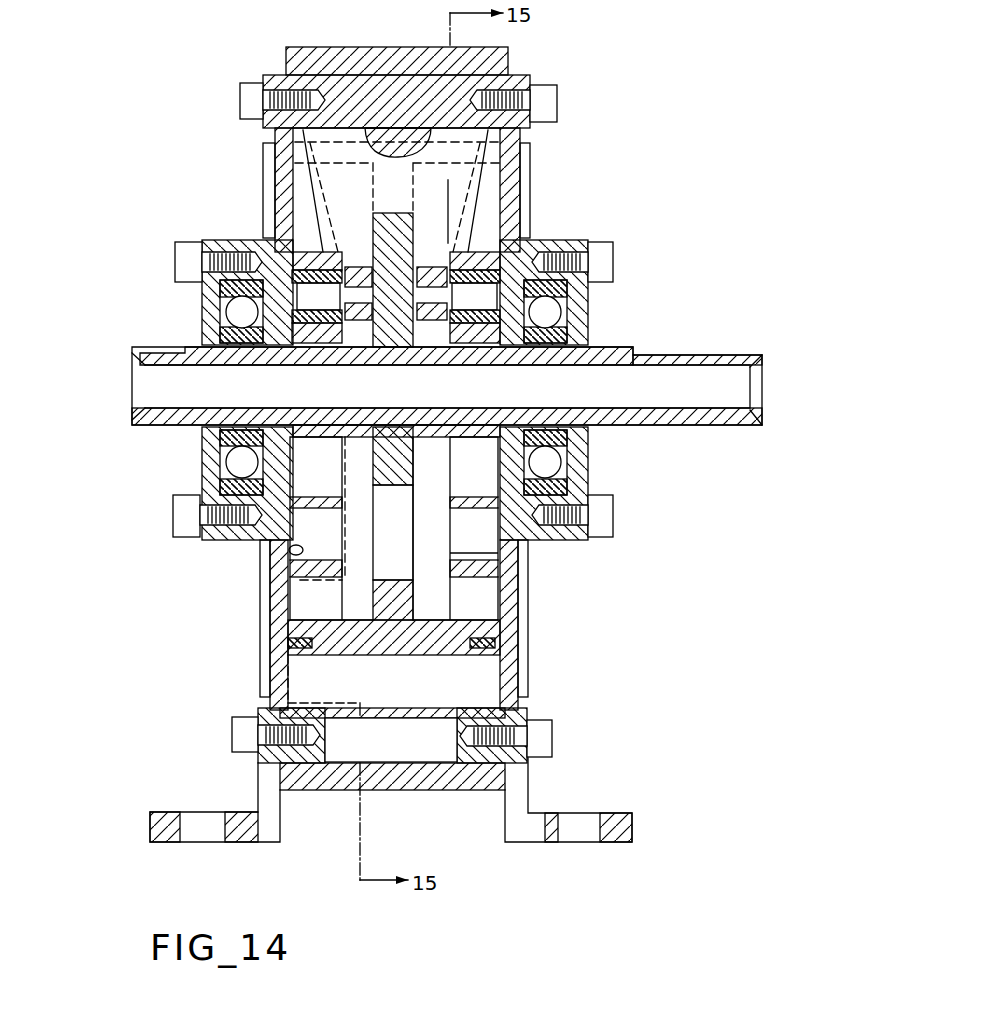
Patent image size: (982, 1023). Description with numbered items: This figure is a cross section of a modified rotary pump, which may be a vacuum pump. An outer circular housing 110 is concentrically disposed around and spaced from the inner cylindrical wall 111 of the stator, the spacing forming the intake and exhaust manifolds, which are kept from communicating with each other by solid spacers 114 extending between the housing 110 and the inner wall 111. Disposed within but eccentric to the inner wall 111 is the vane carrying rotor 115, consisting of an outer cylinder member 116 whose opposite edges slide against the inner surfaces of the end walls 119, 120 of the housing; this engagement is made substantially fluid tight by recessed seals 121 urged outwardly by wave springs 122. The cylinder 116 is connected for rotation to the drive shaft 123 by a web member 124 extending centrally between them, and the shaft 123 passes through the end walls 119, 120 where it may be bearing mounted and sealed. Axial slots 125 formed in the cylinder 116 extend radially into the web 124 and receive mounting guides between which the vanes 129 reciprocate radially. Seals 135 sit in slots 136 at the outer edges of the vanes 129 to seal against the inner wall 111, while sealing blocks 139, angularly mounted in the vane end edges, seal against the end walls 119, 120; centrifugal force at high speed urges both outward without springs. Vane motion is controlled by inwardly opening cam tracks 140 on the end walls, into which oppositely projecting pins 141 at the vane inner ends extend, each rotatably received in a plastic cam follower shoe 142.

The outer circular housing 110 is at (402, 796).
The inner cylindrical wall 111 is at (372, 708).
The solid spacers 114 is at (508, 78).
The vane carrying rotor 115 is at (395, 662).
The outer cylinder member 116 is at (290, 628).
The end wall 119 is at (275, 605).
The end wall 120 is at (510, 655).
The recessed seals 121 is at (520, 620).
The wave springs 122 is at (304, 649).
The drive shaft 123 is at (688, 428).
The web member 124 is at (373, 465).
The axial slots 125 is at (385, 176).
The vanes 129 is at (340, 150).
The seals 135 is at (404, 137).
The slots 136 is at (386, 127).
The sealing blocks 139 is at (296, 214).
The cam tracks 140 is at (288, 548).
The pins 141 is at (432, 297).
The cam follower shoes 142 is at (336, 268).